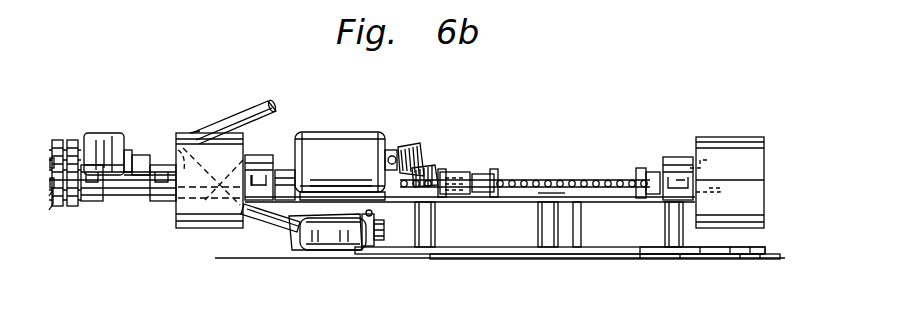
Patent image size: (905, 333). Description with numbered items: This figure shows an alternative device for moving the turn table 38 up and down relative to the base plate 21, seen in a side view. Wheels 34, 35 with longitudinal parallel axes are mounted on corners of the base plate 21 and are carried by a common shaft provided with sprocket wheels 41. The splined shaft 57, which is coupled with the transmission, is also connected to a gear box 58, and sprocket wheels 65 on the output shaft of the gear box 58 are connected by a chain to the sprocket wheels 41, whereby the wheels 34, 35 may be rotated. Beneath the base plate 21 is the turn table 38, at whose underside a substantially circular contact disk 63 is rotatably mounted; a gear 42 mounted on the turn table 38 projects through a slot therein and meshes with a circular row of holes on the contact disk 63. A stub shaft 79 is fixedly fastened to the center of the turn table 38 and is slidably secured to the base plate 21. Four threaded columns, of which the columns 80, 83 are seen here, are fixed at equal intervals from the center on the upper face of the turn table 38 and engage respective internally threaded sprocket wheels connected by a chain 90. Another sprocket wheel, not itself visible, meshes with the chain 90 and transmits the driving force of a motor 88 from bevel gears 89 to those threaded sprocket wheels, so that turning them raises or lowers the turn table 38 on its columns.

The sprocket wheels 65 is at (57, 141).
The gear box 58 is at (105, 135).
The base plate 21 is at (130, 200).
The wheel 35 is at (230, 168).
The splined shaft 57 is at (250, 113).
The motor 88 is at (327, 141).
The bevel gears 89 is at (408, 148).
The chain 90 is at (540, 178).
The threaded column 80 is at (430, 222).
The stub shaft 79 is at (575, 222).
The wheel 34 is at (741, 175).
The gear 42 is at (373, 250).
The contact disk 63 is at (508, 258).
The threaded column 83 is at (663, 232).
The turn table 38 is at (708, 252).
The sprocket wheels 41 is at (52, 198).